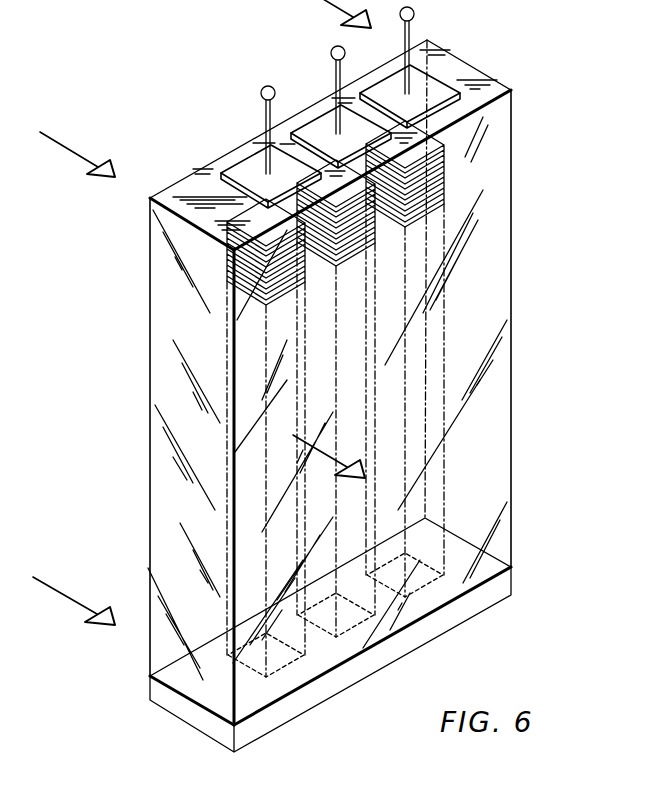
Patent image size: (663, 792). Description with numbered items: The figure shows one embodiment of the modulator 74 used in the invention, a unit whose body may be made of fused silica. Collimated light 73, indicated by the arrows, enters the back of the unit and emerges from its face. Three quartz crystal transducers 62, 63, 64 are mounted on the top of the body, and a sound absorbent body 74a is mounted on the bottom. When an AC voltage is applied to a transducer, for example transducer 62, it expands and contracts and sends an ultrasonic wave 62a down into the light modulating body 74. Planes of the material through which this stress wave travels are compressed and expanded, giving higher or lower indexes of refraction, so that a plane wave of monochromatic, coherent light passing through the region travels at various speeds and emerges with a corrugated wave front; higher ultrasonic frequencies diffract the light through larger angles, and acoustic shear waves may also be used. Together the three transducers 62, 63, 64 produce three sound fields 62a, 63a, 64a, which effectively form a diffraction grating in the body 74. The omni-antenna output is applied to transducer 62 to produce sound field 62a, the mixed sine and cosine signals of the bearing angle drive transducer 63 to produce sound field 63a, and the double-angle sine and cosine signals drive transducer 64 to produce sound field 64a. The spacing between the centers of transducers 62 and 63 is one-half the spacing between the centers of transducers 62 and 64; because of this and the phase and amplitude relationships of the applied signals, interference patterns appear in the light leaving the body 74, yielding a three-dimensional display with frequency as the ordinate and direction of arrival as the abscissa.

The quartz crystal transducer 62 is at (395, 77).
The quartz crystal transducer 63 is at (328, 118).
The quartz crystal transducer 64 is at (242, 167).
The ultrasonic wave / sound field 62a is at (447, 170).
The sound field 63a is at (375, 240).
The sound field 64a is at (293, 284).
The collimated light 73 is at (97, 375).
The modulator 74 is at (511, 396).
The sound absorbent body 74a is at (315, 695).